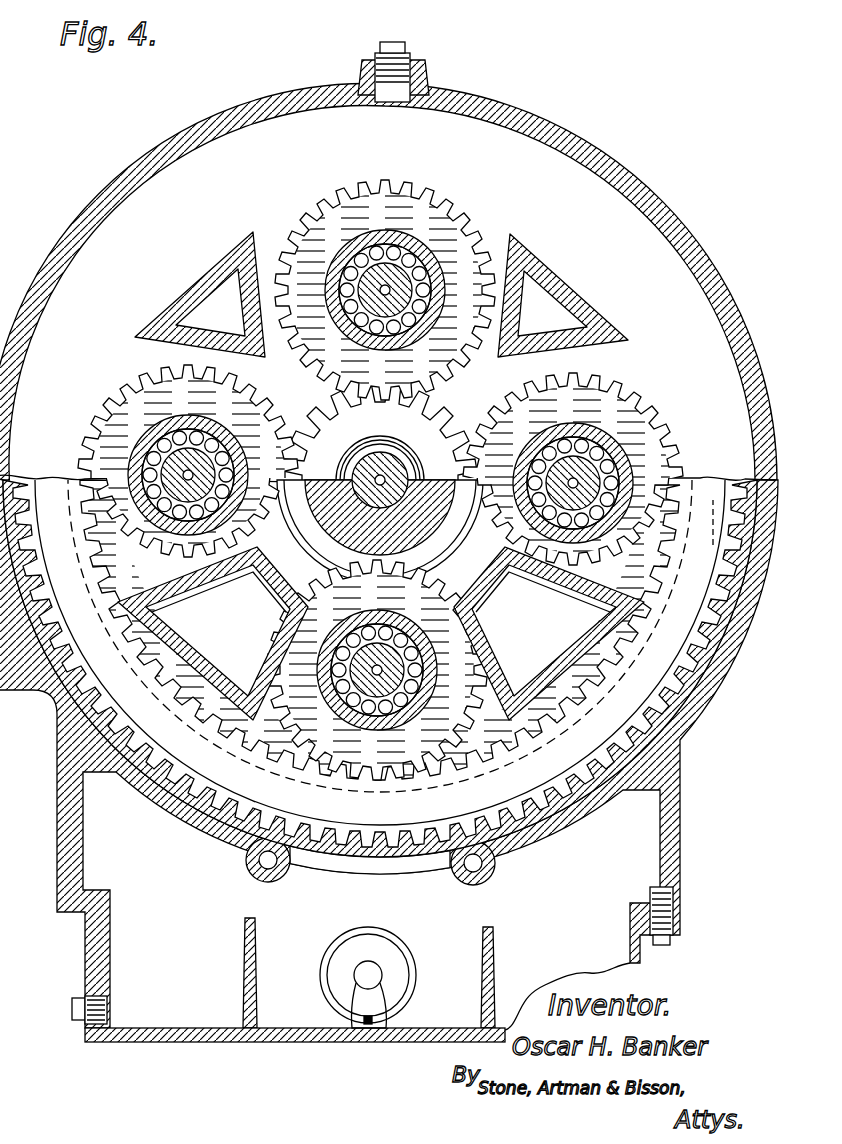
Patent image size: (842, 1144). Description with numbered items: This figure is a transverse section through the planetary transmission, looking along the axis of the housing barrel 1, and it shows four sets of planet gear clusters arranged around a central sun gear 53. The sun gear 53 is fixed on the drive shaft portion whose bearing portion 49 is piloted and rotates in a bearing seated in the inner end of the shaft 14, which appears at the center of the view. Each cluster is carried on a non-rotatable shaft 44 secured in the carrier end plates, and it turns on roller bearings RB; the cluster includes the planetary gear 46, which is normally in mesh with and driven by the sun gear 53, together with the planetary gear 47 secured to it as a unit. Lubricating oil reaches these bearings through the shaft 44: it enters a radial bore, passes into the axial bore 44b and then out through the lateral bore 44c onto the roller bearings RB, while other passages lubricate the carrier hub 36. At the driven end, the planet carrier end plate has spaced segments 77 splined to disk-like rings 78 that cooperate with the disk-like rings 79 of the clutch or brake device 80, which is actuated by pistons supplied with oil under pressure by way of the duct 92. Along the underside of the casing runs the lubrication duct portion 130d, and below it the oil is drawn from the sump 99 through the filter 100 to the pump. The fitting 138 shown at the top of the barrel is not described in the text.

The housing barrel 1 is at (672, 205).
The filler plug 138 is at (403, 66).
The planetary gear 46 is at (447, 200).
The shaft 44 is at (428, 290).
The axial bore 44b is at (433, 303).
The lateral bore 44c is at (432, 328).
The roller bearings RB is at (372, 250).
The bearing portion 49 is at (378, 466).
The sun gear 53 is at (437, 427).
The shaft 14 is at (318, 520).
The planetary gear 47 is at (115, 476).
The carrier hub 36 is at (522, 615).
The spaced segments 77 is at (205, 678).
The disk-like rings 78 is at (713, 505).
The disk-like rings 79 is at (35, 476).
The clutch or brake device 80 is at (707, 693).
The duct 92 is at (262, 863).
The duct portion 130d is at (472, 870).
The sump 99 is at (267, 1045).
The filter 100 is at (350, 983).